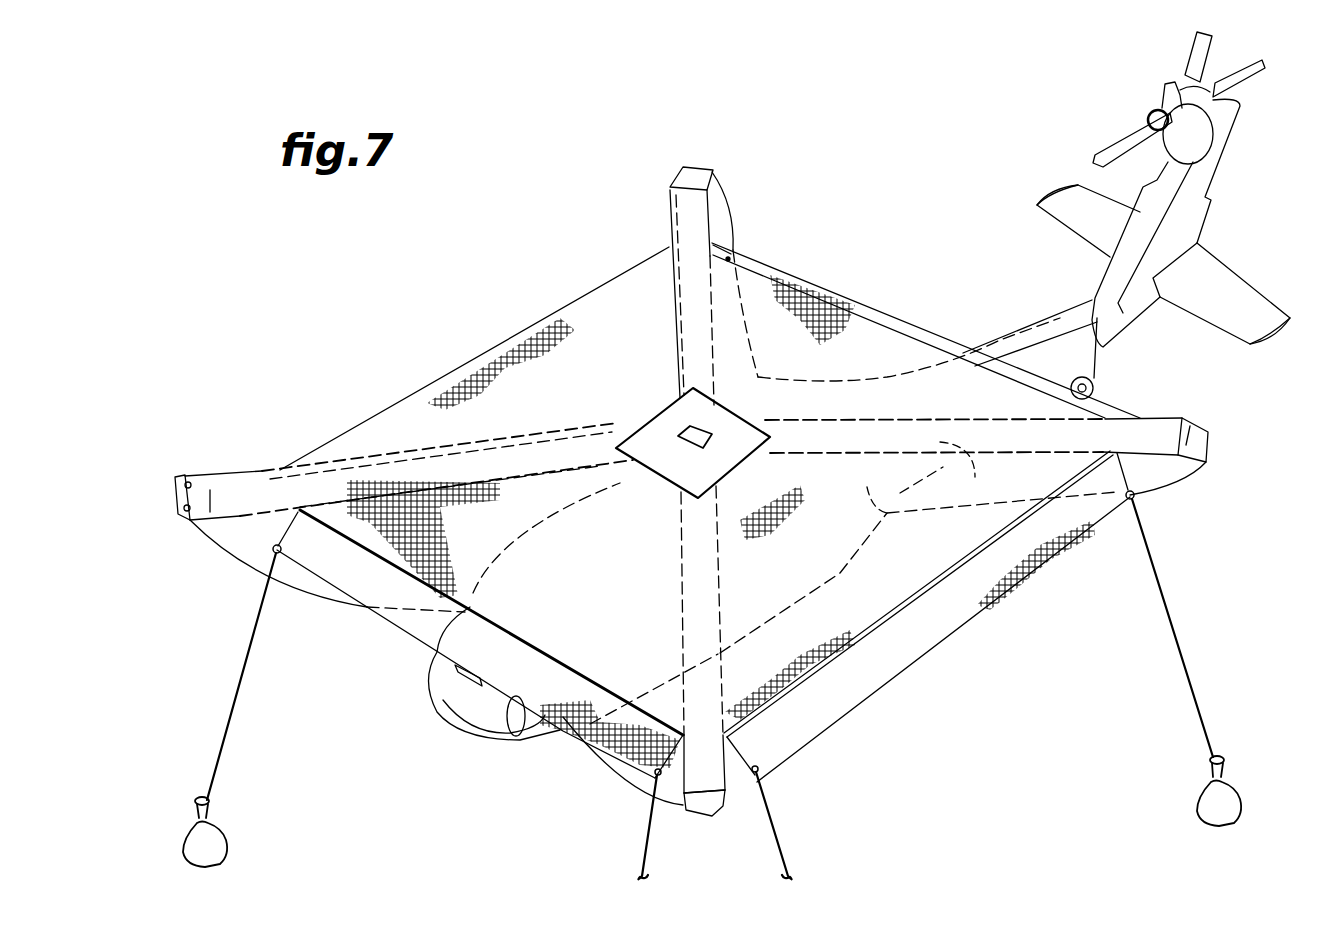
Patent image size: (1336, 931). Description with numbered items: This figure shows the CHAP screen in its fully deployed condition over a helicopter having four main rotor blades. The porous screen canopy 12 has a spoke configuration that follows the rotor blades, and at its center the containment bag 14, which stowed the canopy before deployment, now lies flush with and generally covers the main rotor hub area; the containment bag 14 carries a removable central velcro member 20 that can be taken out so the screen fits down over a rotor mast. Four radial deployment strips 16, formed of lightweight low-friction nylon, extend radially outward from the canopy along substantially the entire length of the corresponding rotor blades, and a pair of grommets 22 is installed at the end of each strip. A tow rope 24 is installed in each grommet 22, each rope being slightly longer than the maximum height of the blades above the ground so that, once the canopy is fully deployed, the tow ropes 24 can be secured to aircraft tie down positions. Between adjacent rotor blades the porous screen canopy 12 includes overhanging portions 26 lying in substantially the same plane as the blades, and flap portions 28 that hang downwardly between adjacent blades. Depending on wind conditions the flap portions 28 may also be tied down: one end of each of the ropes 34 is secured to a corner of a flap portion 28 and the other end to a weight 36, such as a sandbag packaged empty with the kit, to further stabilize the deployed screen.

The porous screen canopy 12 is at (850, 296).
The containment bag 14 is at (632, 430).
The radial deployment strips 16 is at (853, 583).
The central velcro member 20 is at (685, 433).
The grommets 22 is at (1212, 440).
The tow rope 24 is at (732, 214).
The overhanging portions 26 is at (541, 611).
The flap portions 28 is at (523, 675).
The ropes 34 is at (237, 705).
The weights 36 is at (225, 842).